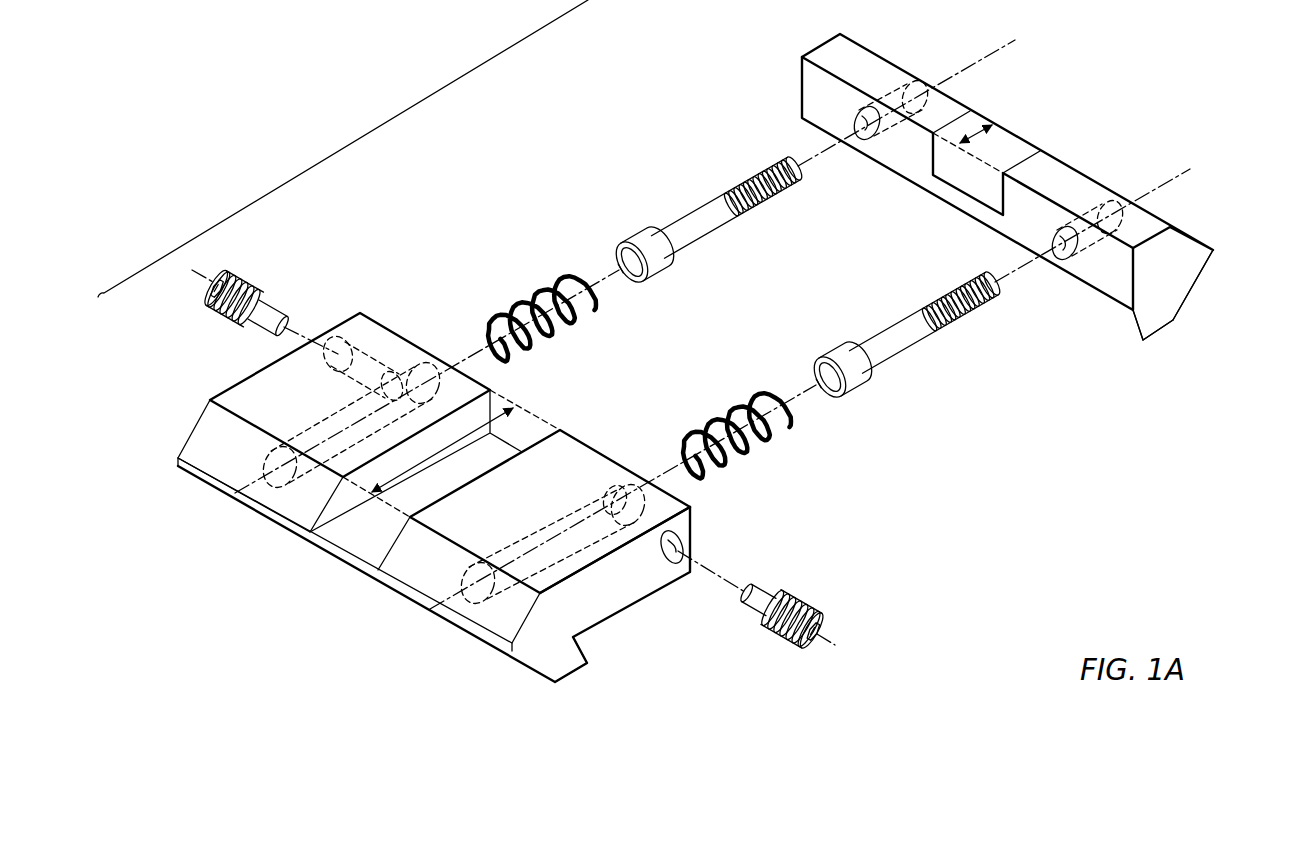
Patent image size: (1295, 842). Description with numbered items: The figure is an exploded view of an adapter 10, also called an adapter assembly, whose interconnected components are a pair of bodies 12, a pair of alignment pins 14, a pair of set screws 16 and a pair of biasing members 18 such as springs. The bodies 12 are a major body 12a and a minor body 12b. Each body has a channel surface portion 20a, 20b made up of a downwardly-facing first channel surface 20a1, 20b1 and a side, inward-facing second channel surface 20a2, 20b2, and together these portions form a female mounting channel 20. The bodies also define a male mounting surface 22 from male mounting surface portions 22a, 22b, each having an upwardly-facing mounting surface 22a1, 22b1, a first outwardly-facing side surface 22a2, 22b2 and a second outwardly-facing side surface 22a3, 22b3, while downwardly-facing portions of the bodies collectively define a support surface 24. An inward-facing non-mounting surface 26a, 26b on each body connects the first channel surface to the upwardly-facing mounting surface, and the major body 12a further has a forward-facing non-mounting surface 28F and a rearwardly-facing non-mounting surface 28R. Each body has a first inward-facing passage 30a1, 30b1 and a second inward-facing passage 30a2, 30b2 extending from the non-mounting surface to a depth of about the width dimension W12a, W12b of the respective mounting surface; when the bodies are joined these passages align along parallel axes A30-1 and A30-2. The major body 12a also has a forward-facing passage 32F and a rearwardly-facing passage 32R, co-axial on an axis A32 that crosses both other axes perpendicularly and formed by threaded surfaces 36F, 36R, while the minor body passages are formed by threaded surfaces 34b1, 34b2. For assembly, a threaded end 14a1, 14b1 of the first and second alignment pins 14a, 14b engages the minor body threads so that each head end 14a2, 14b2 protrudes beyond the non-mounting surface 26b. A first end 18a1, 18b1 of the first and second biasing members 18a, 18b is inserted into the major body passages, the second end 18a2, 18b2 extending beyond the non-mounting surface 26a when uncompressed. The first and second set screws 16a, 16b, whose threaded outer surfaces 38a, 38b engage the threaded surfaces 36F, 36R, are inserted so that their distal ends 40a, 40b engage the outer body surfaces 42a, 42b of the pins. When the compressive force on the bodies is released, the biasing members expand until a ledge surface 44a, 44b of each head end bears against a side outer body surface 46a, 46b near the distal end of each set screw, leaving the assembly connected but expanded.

The adapter 10 is at (410, 118).
The pair of bodies 12 is at (537, 121).
The major body 12a is at (340, 295).
The minor body 12b is at (760, 62).
The pair of alignment pins 14 is at (817, 311).
The first alignment pin 14a is at (868, 326).
The threaded end of first alignment pin 14a1 is at (972, 308).
The head end of first alignment pin 14a2 is at (854, 395).
The second alignment pin 14b is at (732, 243).
The threaded end of second alignment pin 14b1 is at (778, 192).
The head end of second alignment pin 14b2 is at (654, 283).
The pair of set screws 16 is at (170, 600).
The first set screw 16a is at (760, 644).
The second set screw 16b is at (195, 320).
The pair of biasing members 18 is at (647, 373).
The first biasing member 18a is at (720, 407).
The first end of first biasing member 18a1 is at (688, 429).
The second end of first biasing member 18a2 is at (785, 378).
The second biasing member 18b is at (565, 334).
The first end of second biasing member 18b1 is at (488, 313).
The second end of second biasing member 18b2 is at (586, 264).
The female mounting channel 20 is at (662, 600).
The channel surface portion of major body 20a is at (615, 647).
The downwardly-facing first channel surface of major body 20a1 is at (612, 613).
The side, inward-facing second channel surface of major body 20a2 is at (584, 650).
The channel surface portion of minor body 20b is at (1115, 363).
The downwardly-facing first channel surface of minor body 20b1 is at (1126, 329).
The side, inward-facing second channel surface of minor body 20b2 is at (1128, 337).
The male mounting surface 22 is at (623, 183).
The male mounting surface portion of major body 22a is at (356, 306).
The upwardly-facing mounting surface of major body 22a1 is at (293, 423).
The first outwardly-facing side surface of major body 22a2 is at (232, 455).
The second outwardly-facing side surface of major body 22a3 is at (529, 661).
The male mounting surface portion of minor body 22b is at (818, 45).
The upwardly-facing mounting surface of minor body 22b1 is at (862, 73).
The first outwardly-facing side surface of minor body 22b2 is at (1196, 240).
The second outwardly-facing side surface of minor body 22b3 is at (1192, 302).
The support surface 24 is at (557, 680).
The inward-facing non-mounting surface of major body 26a is at (691, 519).
The inward-facing non-mounting surface of minor body 26b is at (1037, 221).
The forward-facing non-mounting surface 28F is at (602, 611).
The rearwardly-facing non-mounting surface 28R is at (243, 401).
The first inward-facing passage of major body 30a1 is at (632, 492).
The second inward-facing passage of major body 30a2 is at (423, 377).
The first inward-facing passage of minor body 30b1 is at (1066, 256).
The second inward-facing passage of minor body 30b2 is at (871, 140).
The forward-facing passage 32F is at (678, 547).
The rearwardly-facing passage 32R is at (337, 354).
The threaded surface of first inward-facing passage of minor body 34b1 is at (1057, 246).
The threaded surface of second inward-facing passage of minor body 34b2 is at (857, 125).
The threaded surface of forward-facing passage 36F is at (673, 560).
The threaded surface of rearwardly-facing passage 36R is at (329, 356).
The threaded outer surface of first set screw 38a is at (777, 612).
The threaded outer surface of second set screw 38b is at (253, 303).
The distal end of first set screw 40a is at (751, 593).
The distal end of second set screw 40b is at (276, 319).
The side outer body surface of first alignment pin 42a is at (923, 333).
The outer body surface of second alignment pin 42b is at (732, 219).
The ledge surface of first alignment pin head end 44a is at (864, 368).
The ledge surface of second alignment pin head end 44b is at (660, 255).
The side outer body surface of first set screw 46a is at (757, 608).
The side outer body surface of second set screw 46b is at (262, 325).
The first passage axis A30-1 is at (811, 403).
The second passage axis A30-2 is at (610, 285).
The set screw passage axis A32 is at (514, 464).
The width dimension of major body mounting surface W12a is at (442, 450).
The width dimension of minor body mounting surface W12b is at (984, 140).